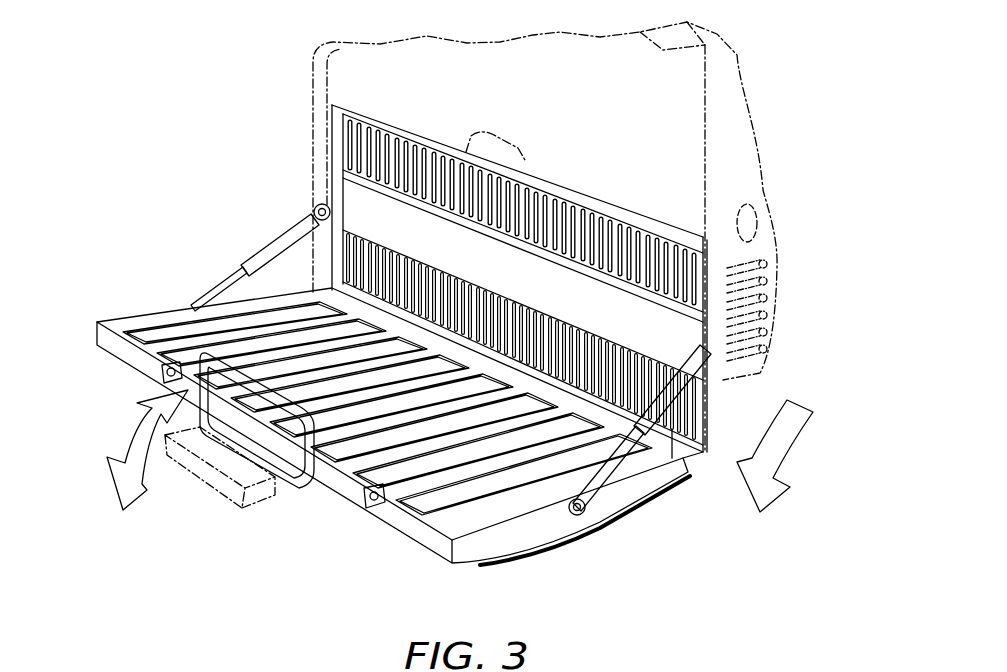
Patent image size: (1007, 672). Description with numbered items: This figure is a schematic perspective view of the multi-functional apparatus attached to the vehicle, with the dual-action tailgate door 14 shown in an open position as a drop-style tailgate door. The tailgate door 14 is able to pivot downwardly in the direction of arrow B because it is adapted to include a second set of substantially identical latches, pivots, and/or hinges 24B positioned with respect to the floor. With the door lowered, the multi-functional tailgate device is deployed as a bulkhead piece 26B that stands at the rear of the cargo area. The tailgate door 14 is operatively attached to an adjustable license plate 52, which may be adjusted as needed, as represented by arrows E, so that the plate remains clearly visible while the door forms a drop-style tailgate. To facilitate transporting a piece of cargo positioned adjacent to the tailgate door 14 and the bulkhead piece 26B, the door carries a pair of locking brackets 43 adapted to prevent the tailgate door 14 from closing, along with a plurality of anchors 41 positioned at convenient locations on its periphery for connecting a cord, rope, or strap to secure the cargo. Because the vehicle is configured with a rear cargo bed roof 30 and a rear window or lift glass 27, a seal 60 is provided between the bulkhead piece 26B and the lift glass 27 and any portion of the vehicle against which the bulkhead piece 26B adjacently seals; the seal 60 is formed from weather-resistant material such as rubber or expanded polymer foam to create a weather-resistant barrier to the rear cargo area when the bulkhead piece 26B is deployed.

The tailgate door 14 is at (502, 566).
The second set of latches, pivots, and/or hinges 24B is at (382, 313).
The bulkhead piece 26B is at (682, 328).
The rear window or lift glass 27 is at (513, 98).
The rear cargo bed roof 30 is at (727, 97).
The anchors 41 is at (160, 377).
The locking brackets 43 is at (674, 477).
The adjustable license plate 52 is at (253, 510).
The seal 60 is at (387, 130).
The arrows E is at (115, 488).
The arrow B is at (778, 503).